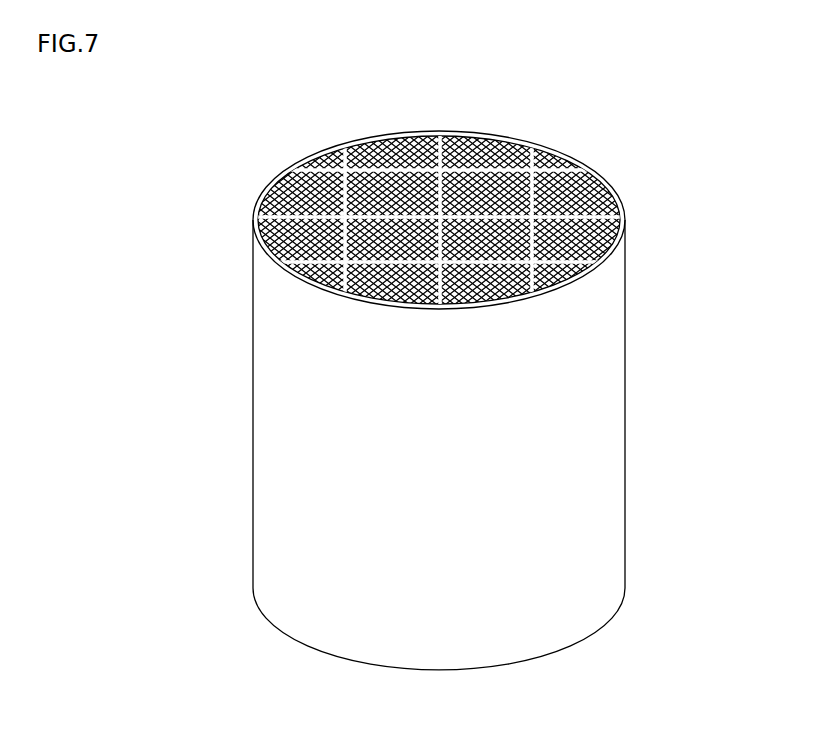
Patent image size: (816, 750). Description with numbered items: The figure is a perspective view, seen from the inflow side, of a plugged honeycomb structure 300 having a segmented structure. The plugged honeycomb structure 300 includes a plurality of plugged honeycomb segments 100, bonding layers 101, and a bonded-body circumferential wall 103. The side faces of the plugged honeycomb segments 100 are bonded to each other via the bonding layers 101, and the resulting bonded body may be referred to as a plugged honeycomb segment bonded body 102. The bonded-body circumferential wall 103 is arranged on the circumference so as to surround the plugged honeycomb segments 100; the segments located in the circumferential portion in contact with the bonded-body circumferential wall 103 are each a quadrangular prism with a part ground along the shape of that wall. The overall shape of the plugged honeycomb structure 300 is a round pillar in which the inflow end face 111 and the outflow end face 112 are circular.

The plugged honeycomb structure 300 is at (476, 389).
The plugged honeycomb segment 100 is at (432, 133).
The bonding layer 101 is at (382, 132).
The plugged honeycomb segment bonded body 102 is at (615, 187).
The bonded-body circumferential wall 103 is at (585, 373).
The inflow end face 111 is at (286, 153).
The outflow end face 112 is at (262, 638).